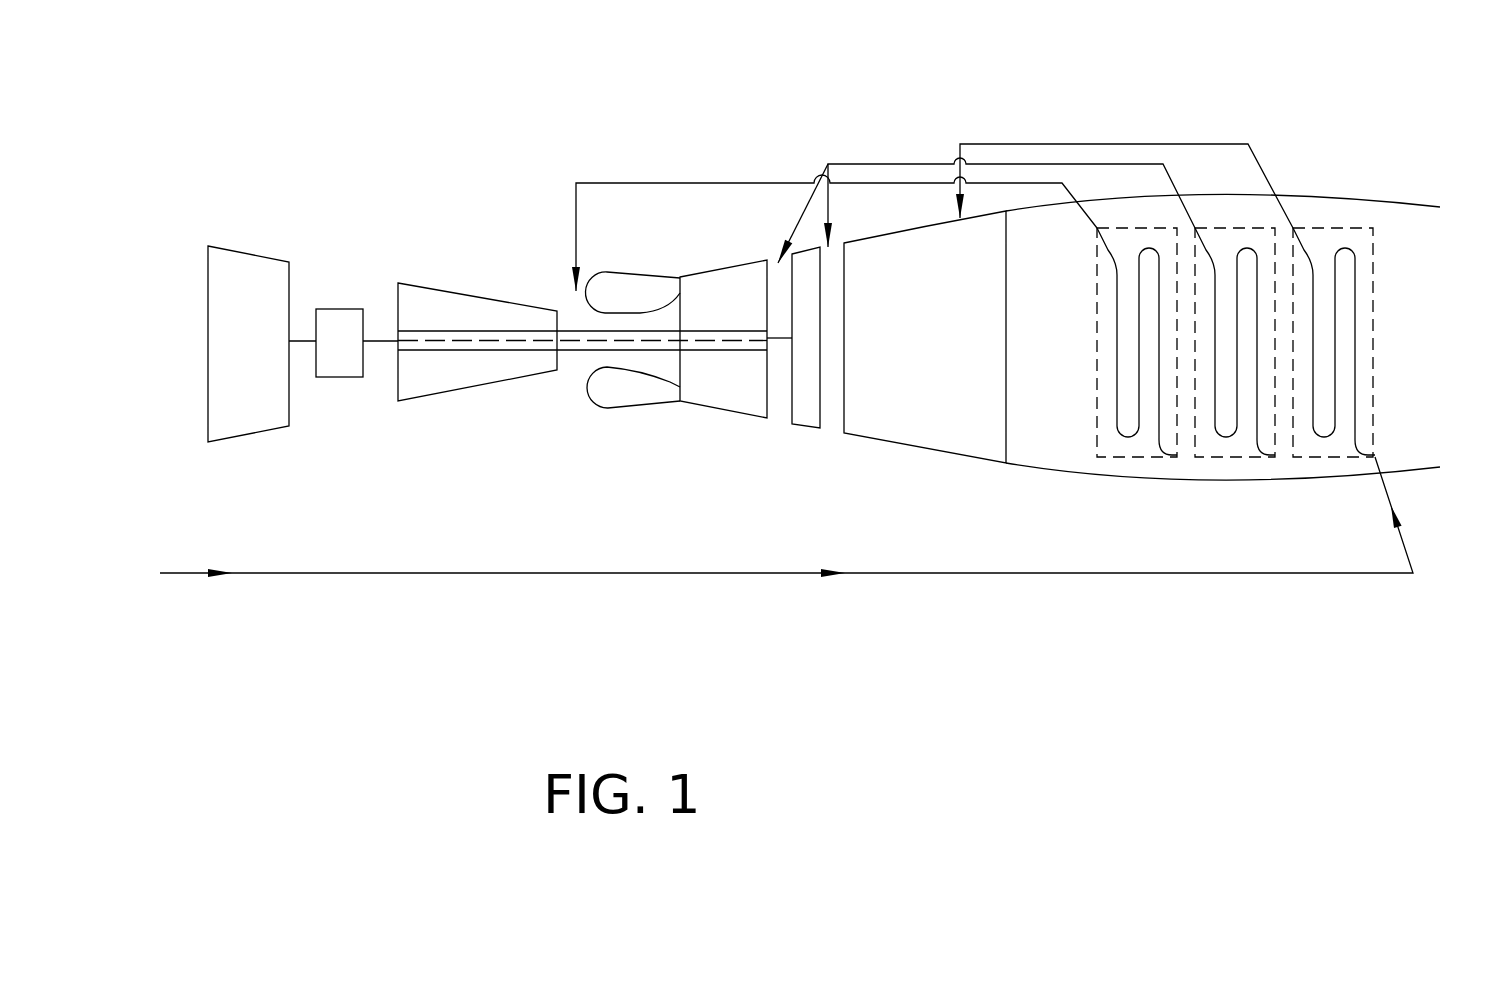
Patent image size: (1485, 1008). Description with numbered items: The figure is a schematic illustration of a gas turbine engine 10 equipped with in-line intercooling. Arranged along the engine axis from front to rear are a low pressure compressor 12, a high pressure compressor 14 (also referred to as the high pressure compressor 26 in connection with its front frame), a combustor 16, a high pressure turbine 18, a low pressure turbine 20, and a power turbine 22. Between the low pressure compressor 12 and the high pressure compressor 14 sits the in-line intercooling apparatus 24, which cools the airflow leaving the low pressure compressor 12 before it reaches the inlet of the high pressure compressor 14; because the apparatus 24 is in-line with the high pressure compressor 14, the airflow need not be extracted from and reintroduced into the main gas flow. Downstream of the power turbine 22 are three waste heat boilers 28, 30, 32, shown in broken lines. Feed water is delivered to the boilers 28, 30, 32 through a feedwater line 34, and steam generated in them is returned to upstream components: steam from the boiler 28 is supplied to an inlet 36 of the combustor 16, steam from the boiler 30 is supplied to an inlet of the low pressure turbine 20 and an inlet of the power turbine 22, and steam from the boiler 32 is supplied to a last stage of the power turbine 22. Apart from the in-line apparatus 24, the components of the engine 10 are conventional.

The gas turbine engine 10 is at (1295, 147).
The low pressure compressor 12 is at (252, 250).
The high pressure compressor 14 is at (517, 377).
The combustor 16 is at (630, 408).
The high pressure turbine 18 is at (740, 413).
The low pressure turbine 20 is at (812, 430).
The power turbine 22 is at (947, 457).
The in-line intercooling apparatus 24 is at (347, 307).
The high pressure compressor 26 is at (397, 303).
The waste heat boiler 28 is at (1097, 315).
The waste heat boiler 30 is at (1234, 460).
The waste heat boiler 32 is at (1375, 316).
The feedwater line 34 is at (728, 572).
The inlet 36 is at (583, 303).